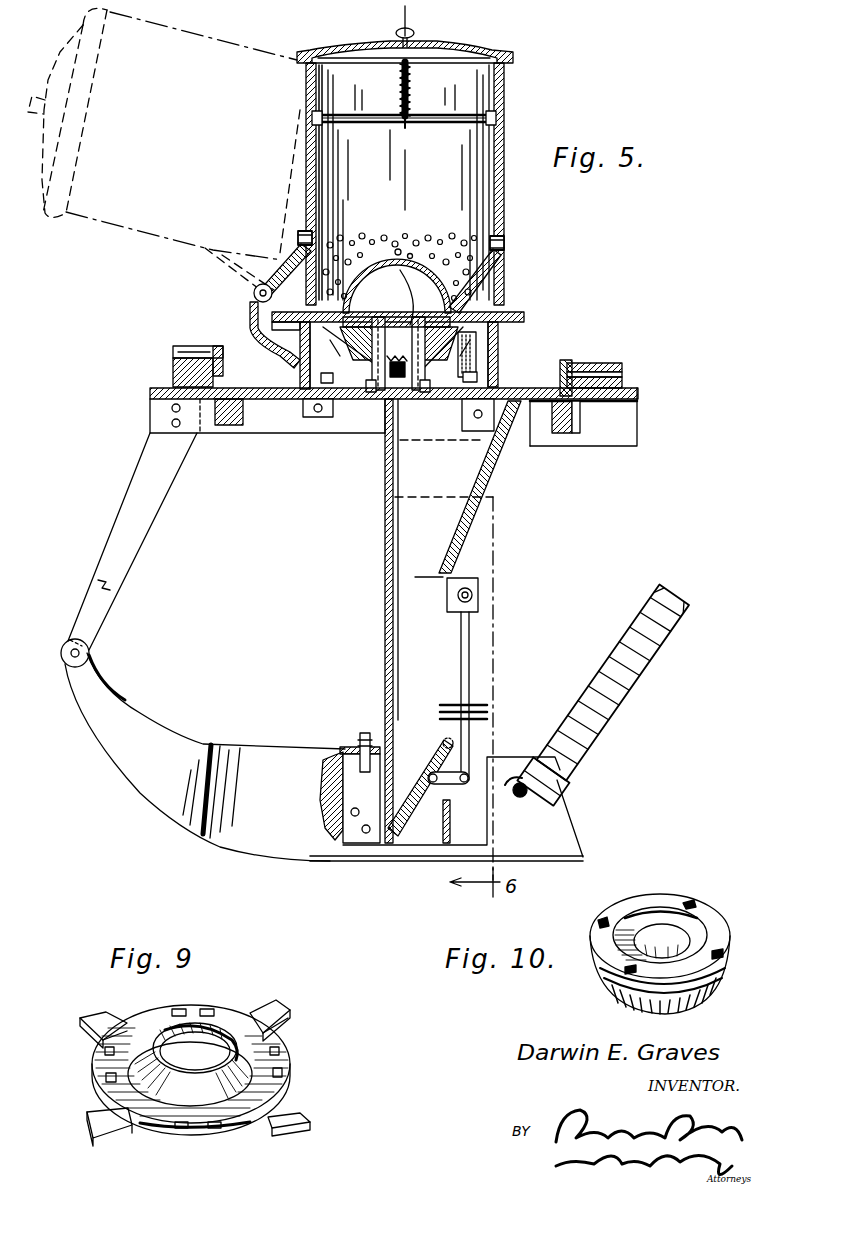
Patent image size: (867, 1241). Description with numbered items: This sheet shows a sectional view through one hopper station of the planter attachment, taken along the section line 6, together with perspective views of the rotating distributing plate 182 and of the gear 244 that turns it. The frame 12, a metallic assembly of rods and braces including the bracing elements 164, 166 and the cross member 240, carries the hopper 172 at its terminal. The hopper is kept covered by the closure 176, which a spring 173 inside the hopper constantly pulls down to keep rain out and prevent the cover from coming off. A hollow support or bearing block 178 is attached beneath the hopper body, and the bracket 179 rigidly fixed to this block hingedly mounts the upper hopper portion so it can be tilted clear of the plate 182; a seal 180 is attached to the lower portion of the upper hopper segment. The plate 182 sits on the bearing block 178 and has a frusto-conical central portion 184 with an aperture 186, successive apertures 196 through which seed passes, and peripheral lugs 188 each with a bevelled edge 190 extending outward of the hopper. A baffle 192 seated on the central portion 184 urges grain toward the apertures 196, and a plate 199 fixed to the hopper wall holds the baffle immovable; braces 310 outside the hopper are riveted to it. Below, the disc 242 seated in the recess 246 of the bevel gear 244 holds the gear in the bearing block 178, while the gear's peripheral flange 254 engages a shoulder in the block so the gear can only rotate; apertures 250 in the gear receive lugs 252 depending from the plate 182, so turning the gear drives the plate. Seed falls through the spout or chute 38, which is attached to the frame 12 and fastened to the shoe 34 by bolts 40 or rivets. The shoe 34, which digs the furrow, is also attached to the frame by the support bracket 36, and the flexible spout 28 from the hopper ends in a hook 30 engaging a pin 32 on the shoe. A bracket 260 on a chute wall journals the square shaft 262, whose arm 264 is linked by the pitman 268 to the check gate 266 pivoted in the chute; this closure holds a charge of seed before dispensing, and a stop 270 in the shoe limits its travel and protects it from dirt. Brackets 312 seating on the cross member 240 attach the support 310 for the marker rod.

In FIG. 5, the section line 6- 6 is at (388, 19).
In FIG. 5, the frame 12 is at (144, 401).
In FIG. 5, the flexible spout 28 is at (602, 703).
In FIG. 5, the hook 30 is at (515, 772).
In FIG. 5, the pin 32 is at (520, 797).
In FIG. 5, the shoe 34 is at (215, 845).
In FIG. 5, the support bracket 36 is at (155, 515).
In FIG. 5, the spout 38 is at (384, 490).
In FIG. 5, the bolts 40 is at (365, 733).
In FIG. 5, the bracing element 164 is at (565, 434).
In FIG. 5, the bracing element 166 is at (228, 426).
In FIG. 5, the hopper 172 is at (504, 280).
In FIG. 5, the spring 173 is at (411, 88).
In FIG. 5, the closure 176 is at (478, 52).
In FIG. 5, the hollow support 178 is at (500, 352).
In FIG. 5, the bracket 179 is at (250, 320).
In FIG. 5, the seal 180 is at (500, 315).
In FIG. 5, the plate 182 is at (295, 352).
In FIG. 9, the plate 182 is at (270, 1035).
In FIG. 5, the frusto-conical central portion 184 is at (362, 285).
In FIG. 9, the frusto-conical central portion 184 is at (232, 1040).
In FIG. 9, the aperture 186 is at (170, 1032).
In FIG. 5, the lugs 188 is at (280, 272).
In FIG. 9, the lugs 188 is at (95, 1012).
In FIG. 9, the bevelled edge 190 is at (85, 1142).
In FIG. 5, the baffle 192 is at (400, 250).
In FIG. 9, the apertures 196 is at (104, 1052).
In FIG. 5, the plate 199 is at (350, 240).
In FIG. 5, the cross member 240 is at (592, 402).
In FIG. 5, the disc 242 is at (412, 272).
In FIG. 5, the gear 244 is at (374, 393).
In FIG. 10, the gear 244 is at (712, 927).
In FIG. 10, the recess 246 is at (655, 915).
In FIG. 10, the apertures 250 is at (603, 918).
In FIG. 5, the lugs 252 is at (350, 340).
In FIG. 5, the peripheral flange 254 is at (500, 326).
In FIG. 10, the peripheral flange 254 is at (722, 965).
In FIG. 5, the bracket 260 is at (462, 578).
In FIG. 5, the shaft 262 is at (472, 593).
In FIG. 5, the arm 264 is at (470, 667).
In FIG. 5, the check gate 266 is at (412, 790).
In FIG. 5, the pitman 268 is at (432, 785).
In FIG. 5, the stop 270 is at (453, 812).
In FIG. 5, the support 310 is at (570, 360).
In FIG. 5, the brackets 312 is at (178, 346).